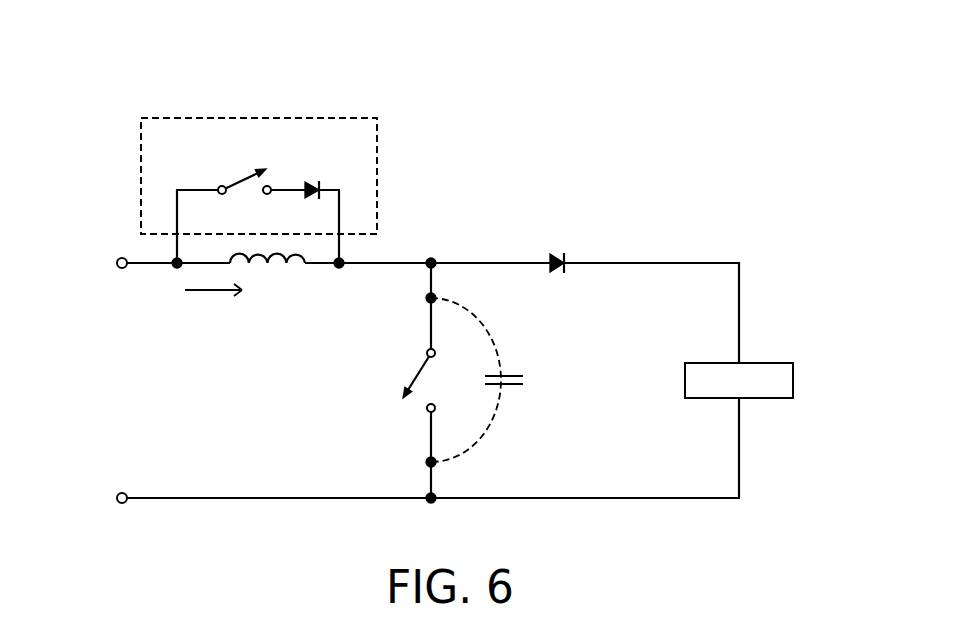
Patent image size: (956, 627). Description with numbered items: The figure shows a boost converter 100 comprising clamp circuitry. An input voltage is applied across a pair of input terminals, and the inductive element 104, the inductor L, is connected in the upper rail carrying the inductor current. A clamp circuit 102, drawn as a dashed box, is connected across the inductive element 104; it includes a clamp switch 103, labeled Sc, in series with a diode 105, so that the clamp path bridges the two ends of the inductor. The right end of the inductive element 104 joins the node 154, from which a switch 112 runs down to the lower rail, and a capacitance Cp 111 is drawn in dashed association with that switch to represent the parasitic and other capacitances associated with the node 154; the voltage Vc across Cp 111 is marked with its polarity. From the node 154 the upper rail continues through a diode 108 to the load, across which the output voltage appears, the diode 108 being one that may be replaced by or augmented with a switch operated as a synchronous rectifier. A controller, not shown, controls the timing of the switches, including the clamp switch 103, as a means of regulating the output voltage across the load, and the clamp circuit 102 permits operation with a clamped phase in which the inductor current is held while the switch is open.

The boost converter 100 is at (476, 292).
The clamp circuit 102 is at (278, 172).
The clamp switch 103 is at (236, 178).
The inductive element 104 is at (293, 261).
The diode 105 is at (312, 180).
The diode 108 is at (560, 255).
The capacitance Cp 111 is at (505, 374).
The switch 112 is at (420, 362).
The node 154 is at (437, 240).